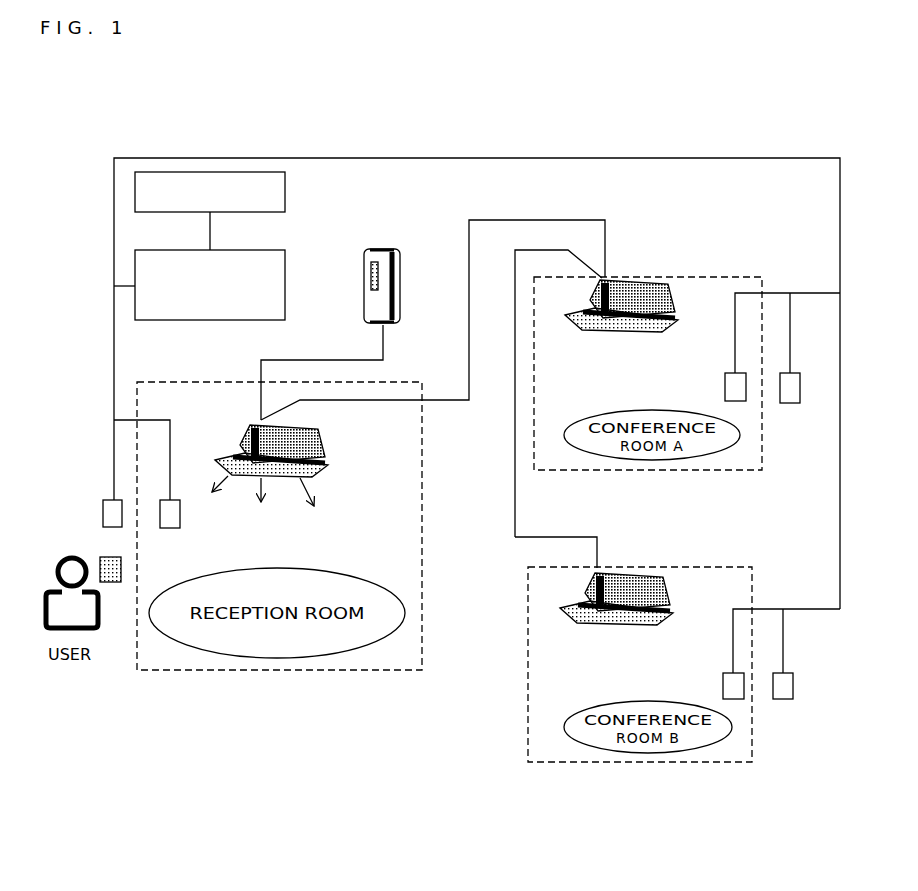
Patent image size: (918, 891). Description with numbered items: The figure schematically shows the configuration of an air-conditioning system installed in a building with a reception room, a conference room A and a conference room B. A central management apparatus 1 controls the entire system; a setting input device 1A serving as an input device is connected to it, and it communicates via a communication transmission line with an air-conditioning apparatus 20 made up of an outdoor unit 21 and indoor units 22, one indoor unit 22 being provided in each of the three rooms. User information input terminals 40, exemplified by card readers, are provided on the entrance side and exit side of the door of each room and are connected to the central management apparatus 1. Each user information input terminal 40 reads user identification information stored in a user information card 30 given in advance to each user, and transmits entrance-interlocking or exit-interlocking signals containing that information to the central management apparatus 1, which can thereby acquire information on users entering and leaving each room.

The central management apparatus 1 is at (285, 250).
The setting input device 1A is at (287, 180).
The air-conditioning apparatus 20 is at (413, 217).
The outdoor unit 21 is at (404, 280).
The indoor unit 22 is at (645, 277).
The user information card 30 is at (100, 560).
The user information input terminal 40 is at (106, 500).